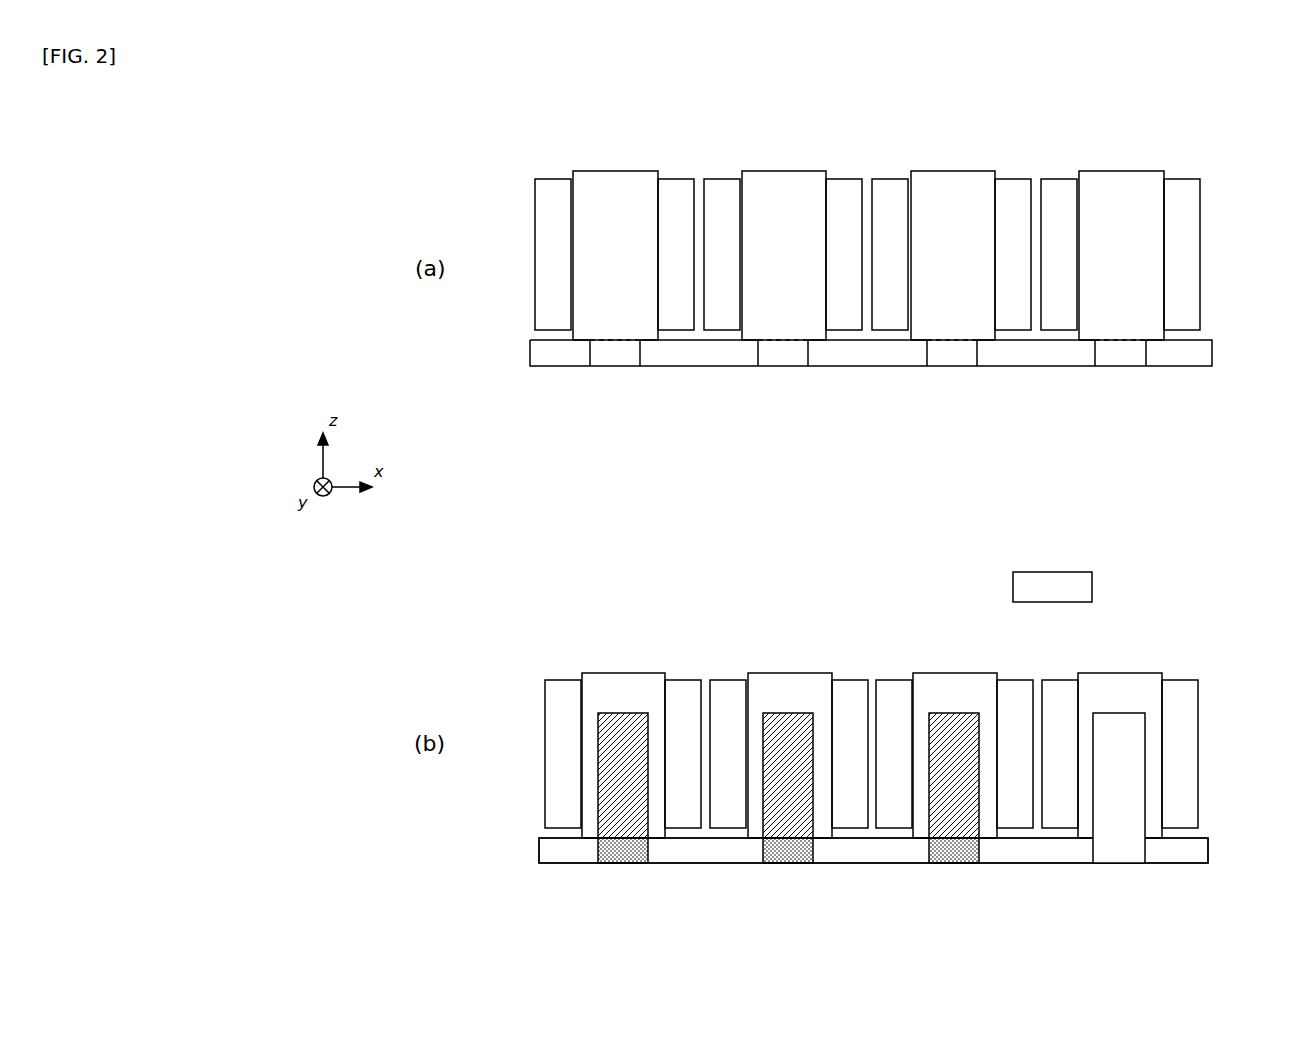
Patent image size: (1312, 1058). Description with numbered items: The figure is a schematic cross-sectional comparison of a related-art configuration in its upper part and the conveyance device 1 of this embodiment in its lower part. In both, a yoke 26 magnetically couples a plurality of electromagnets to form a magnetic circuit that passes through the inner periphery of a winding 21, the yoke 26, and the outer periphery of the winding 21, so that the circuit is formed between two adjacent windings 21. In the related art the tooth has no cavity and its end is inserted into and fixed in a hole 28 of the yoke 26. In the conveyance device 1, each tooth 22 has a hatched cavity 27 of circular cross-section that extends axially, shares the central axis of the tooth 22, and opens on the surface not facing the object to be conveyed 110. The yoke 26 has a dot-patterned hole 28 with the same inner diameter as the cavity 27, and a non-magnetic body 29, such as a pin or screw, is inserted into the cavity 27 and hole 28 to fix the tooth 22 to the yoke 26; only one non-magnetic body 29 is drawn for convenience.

The conveyance device 1 is at (546, 597).
The winding 21 is at (553, 188).
The tooth 22 is at (613, 180).
The yoke 26 is at (557, 355).
The cavity 27 is at (608, 778).
The hole 28 is at (611, 355).
The non-magnetic body 29 is at (1131, 761).
The object to be conveyed 110 is at (1063, 584).